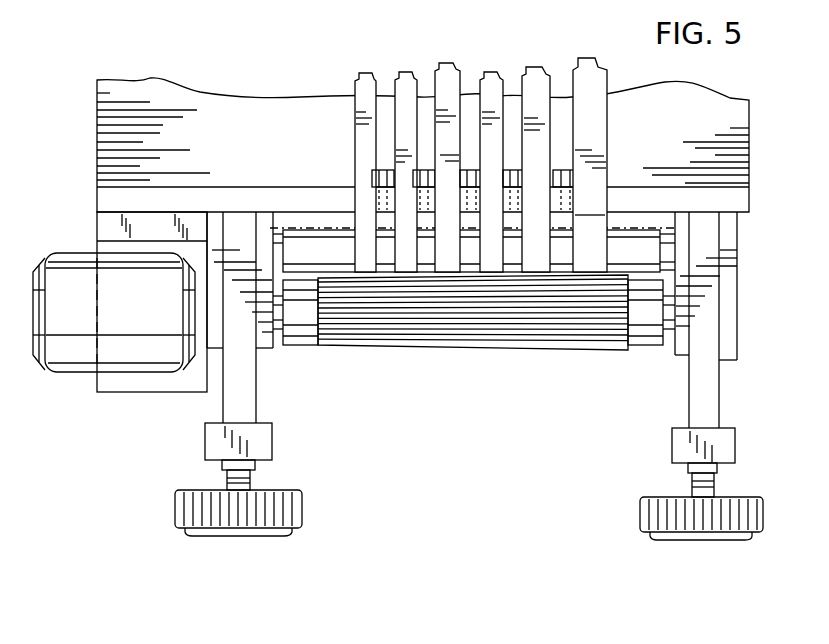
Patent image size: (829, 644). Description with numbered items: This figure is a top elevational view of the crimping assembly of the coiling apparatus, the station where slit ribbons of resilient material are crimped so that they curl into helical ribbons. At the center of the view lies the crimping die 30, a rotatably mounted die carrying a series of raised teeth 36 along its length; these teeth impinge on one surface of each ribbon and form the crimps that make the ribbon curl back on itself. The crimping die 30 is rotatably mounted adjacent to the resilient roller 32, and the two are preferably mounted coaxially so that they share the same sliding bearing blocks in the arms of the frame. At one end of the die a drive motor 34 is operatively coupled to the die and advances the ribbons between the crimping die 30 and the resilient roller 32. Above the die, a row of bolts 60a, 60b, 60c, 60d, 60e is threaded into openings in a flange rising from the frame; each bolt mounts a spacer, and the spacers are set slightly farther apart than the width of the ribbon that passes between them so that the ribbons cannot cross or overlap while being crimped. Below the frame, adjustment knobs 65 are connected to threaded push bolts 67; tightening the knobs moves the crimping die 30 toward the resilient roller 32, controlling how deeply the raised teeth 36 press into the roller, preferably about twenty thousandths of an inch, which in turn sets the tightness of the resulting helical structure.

The crimping die 30 is at (302, 313).
The resilient roller 32 is at (637, 262).
The drive motor 34 is at (68, 352).
The raised teeth 36 is at (465, 322).
The bolt 60a is at (565, 172).
The bolt 60b is at (507, 172).
The bolt 60c is at (472, 172).
The bolt 60d is at (423, 170).
The bolt 60e is at (383, 172).
The adjustment knob 65 is at (210, 532).
The threaded push bolt 67 is at (250, 480).